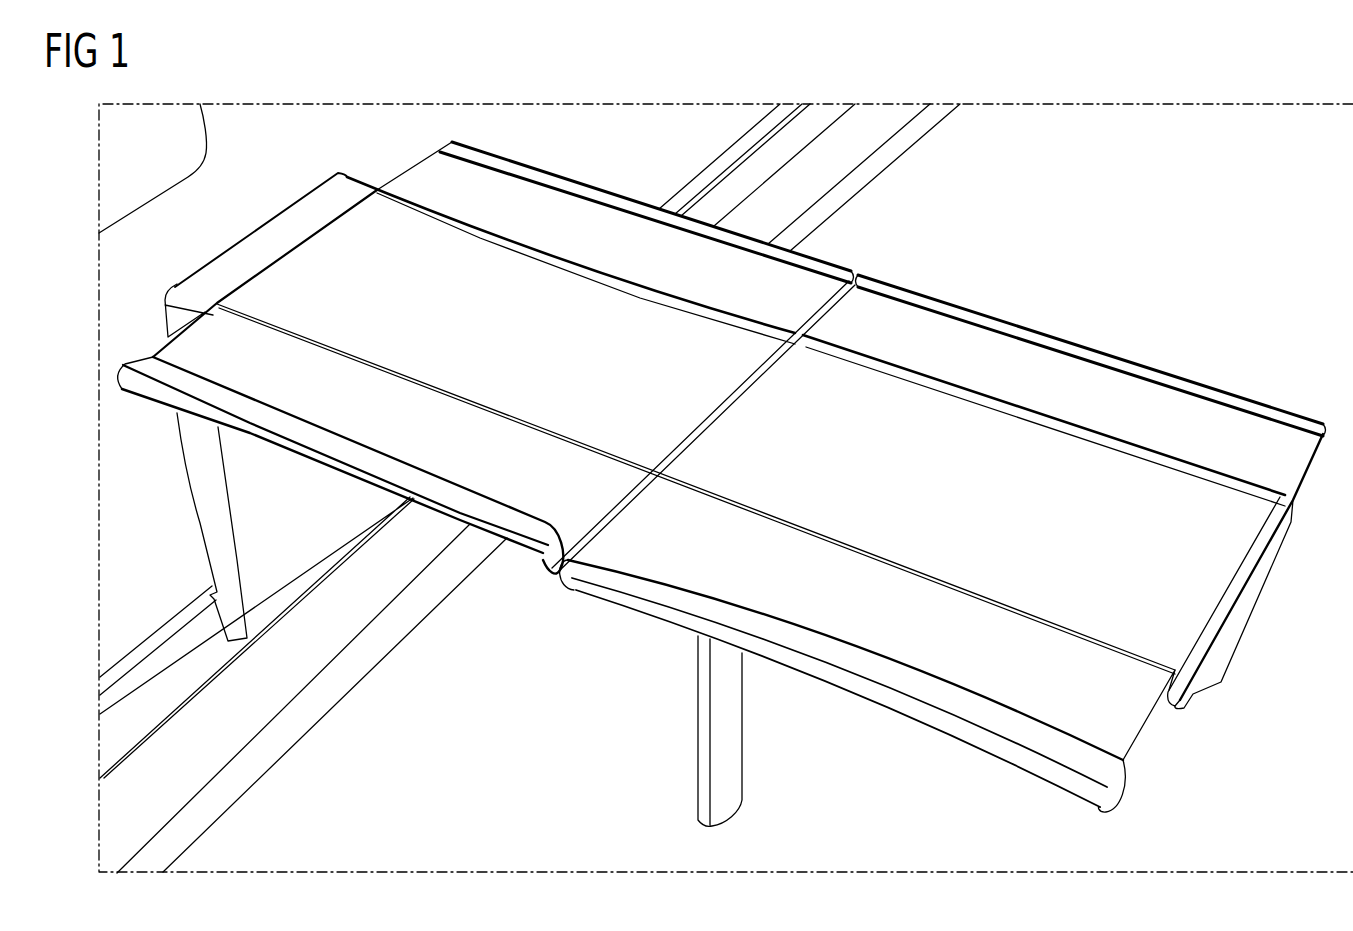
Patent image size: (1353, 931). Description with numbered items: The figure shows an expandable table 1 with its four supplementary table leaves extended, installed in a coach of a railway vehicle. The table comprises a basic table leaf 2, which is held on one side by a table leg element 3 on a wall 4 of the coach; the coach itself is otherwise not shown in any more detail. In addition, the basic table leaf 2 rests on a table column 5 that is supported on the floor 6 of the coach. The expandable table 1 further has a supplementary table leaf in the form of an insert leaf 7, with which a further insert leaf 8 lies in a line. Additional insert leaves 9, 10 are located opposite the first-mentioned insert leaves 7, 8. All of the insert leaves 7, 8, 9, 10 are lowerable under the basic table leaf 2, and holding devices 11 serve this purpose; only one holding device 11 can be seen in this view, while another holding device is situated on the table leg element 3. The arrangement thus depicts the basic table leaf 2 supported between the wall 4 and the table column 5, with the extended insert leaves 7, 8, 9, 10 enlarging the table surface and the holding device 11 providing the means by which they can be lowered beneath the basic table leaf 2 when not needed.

The expandable table 1 is at (722, 476).
The basic table leaf 2 is at (912, 398).
The table leg element 3 is at (208, 525).
The wall 4 is at (115, 594).
The table column 5 is at (728, 760).
The floor 6 is at (620, 825).
The insert leaf 7 is at (535, 530).
The insert leaf 8 is at (910, 690).
The insert leaf 9 is at (587, 207).
The insert leaf 10 is at (1133, 384).
The holding device 11 is at (1223, 646).